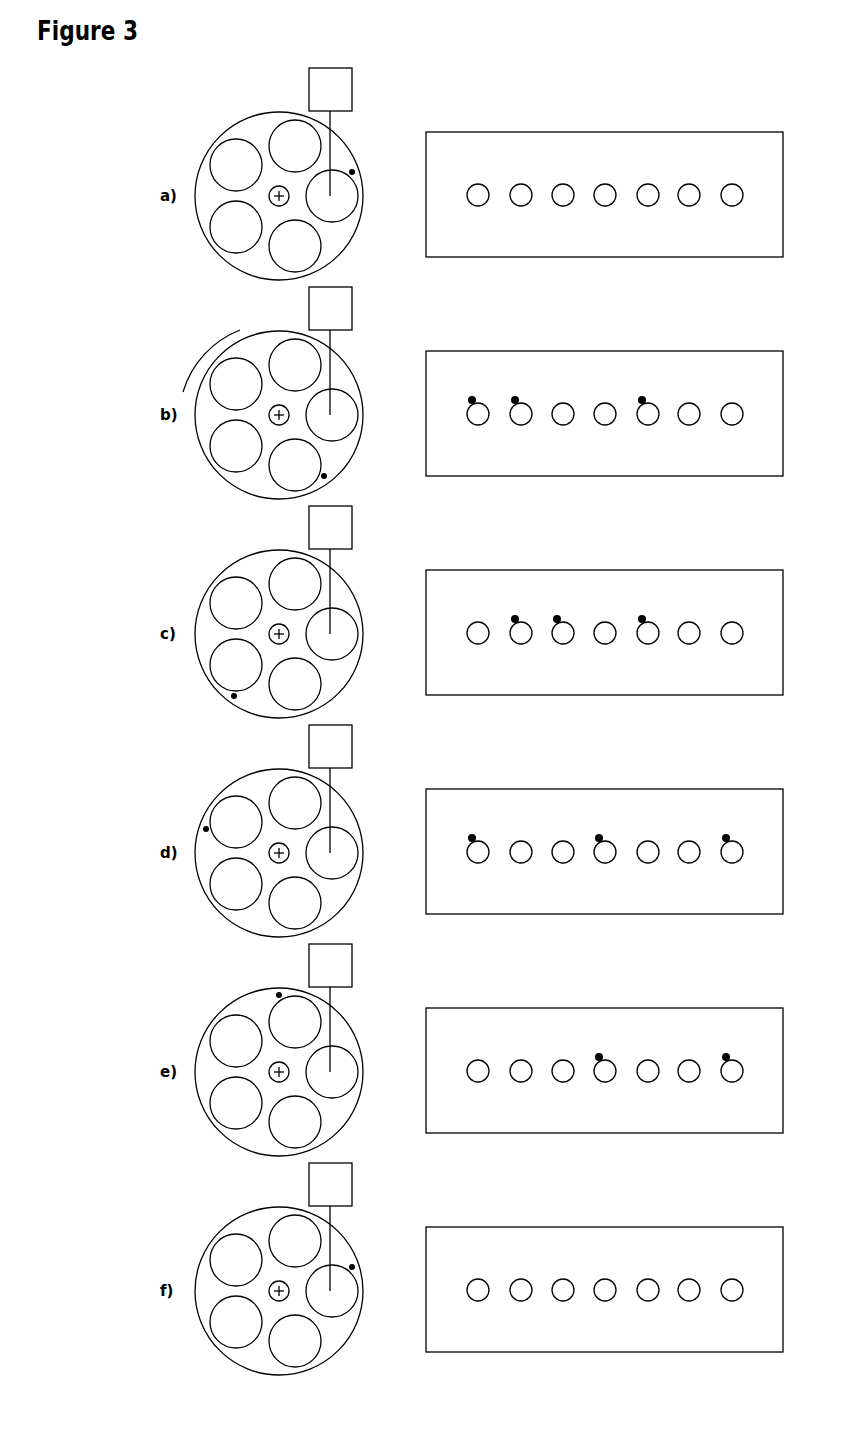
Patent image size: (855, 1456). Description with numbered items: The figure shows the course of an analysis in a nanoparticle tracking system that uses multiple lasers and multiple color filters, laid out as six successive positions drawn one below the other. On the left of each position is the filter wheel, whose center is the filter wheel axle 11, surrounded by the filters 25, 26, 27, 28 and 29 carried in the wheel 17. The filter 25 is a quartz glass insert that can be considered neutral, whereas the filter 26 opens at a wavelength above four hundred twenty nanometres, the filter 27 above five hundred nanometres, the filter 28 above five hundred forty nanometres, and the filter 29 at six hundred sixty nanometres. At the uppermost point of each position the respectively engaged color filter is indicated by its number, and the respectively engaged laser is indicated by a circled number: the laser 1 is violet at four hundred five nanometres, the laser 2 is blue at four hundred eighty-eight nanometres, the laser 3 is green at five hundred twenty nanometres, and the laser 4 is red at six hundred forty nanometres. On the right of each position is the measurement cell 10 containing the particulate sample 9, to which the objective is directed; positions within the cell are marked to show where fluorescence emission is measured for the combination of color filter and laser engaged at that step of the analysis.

The laser 1 is at (129, 90).
The laser 2 is at (175, 90).
The laser 3 is at (221, 90).
The laser 4 is at (309, 90).
The sample 9 is at (678, 142).
The measurement cell 10 is at (730, 132).
The filter wheel axle 11 is at (285, 190).
The rotor 17 is at (345, 233).
The filter 25 is at (345, 188).
The filter 26 is at (345, 407).
The filter 27 is at (345, 626).
The filter 28 is at (345, 845).
The filter 29 is at (345, 1064).